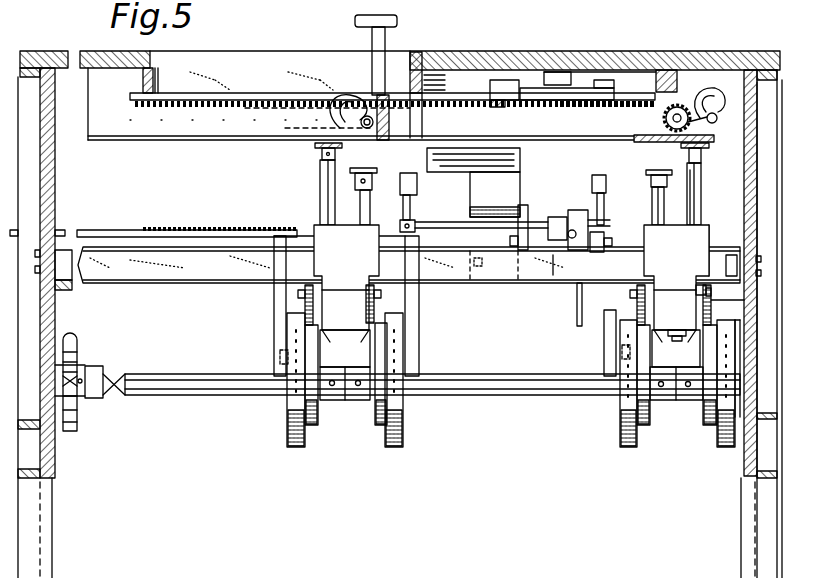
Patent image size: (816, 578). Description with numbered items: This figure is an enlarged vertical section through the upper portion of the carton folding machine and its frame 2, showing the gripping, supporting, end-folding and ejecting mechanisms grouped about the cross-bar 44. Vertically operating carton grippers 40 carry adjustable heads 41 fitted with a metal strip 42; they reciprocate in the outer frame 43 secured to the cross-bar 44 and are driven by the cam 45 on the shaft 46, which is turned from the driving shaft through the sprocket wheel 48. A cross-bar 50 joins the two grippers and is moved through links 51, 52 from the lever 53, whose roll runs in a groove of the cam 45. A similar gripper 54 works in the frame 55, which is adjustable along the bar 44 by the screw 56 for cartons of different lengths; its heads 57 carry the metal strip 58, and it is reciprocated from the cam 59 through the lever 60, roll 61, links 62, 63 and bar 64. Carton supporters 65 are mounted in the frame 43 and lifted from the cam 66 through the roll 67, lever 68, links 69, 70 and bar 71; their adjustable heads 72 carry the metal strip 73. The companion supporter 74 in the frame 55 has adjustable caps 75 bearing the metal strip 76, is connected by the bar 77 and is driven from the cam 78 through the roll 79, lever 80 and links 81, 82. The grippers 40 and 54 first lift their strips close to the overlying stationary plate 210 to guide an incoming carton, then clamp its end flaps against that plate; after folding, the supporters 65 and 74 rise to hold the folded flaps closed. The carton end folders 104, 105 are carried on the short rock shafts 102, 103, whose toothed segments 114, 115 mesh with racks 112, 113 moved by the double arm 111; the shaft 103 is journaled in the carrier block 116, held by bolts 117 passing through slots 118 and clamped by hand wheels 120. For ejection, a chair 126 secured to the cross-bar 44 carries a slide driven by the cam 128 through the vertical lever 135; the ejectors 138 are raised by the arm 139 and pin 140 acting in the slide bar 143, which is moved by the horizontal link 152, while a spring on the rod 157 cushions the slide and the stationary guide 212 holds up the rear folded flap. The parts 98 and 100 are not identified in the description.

The frame 2 is at (40, 184).
The carton grippers and carton guides 40 is at (701, 182).
The adjustable heads 41 is at (701, 156).
The metal strip 42 is at (709, 145).
The frame 43 is at (706, 230).
The cross-bar 44 is at (200, 280).
The cam 45 is at (726, 447).
The shaft 46 is at (116, 361).
The sprocket wheel 48 is at (76, 345).
The cross-bar 50 is at (700, 290).
The link 51 is at (746, 302).
The link 52 is at (703, 340).
The lever 53 is at (755, 340).
The gripper 54 is at (320, 180).
The frame 55 is at (430, 333).
The screw 56 is at (218, 228).
The adjustable heads 57 is at (322, 154).
The metal strip 58 is at (316, 146).
The cam 59 is at (287, 425).
The lever 60 is at (314, 412).
The roll 61 is at (300, 357).
The link 62 is at (345, 365).
The link 63 is at (305, 300).
The bar 64 is at (318, 290).
The carton supporter 65 is at (684, 197).
The cam 66 is at (630, 447).
The roll 67 is at (630, 352).
The lever 68 is at (646, 410).
The link 69 is at (674, 347).
The link 70 is at (637, 312).
The bar 71 is at (647, 292).
The adjustable heads 72 is at (652, 180).
The metal strip 73 is at (665, 175).
The carton supporter 74 is at (369, 208).
The adjustable caps 75 is at (372, 181).
The metal strip 76 is at (365, 168).
The bar 77 is at (380, 288).
The cam 78 is at (403, 430).
The roll 79 is at (380, 357).
The lever 80 is at (376, 418).
The link 81 is at (368, 340).
The link 82 is at (370, 310).
The cover 98 is at (590, 62).
The block 100 is at (497, 108).
The rock shaft 102 is at (717, 118).
The rock shaft 103 is at (360, 122).
The carton end folder 104 is at (716, 95).
The carton end folder 105 is at (352, 95).
The double arm 111 is at (536, 102).
The rack 112 is at (135, 106).
The rack 113 is at (620, 106).
The toothed segment 114 is at (665, 120).
The toothed segment 115 is at (327, 123).
The carrier block 116 is at (421, 118).
The bolts 117 is at (388, 60).
The slots 118 is at (361, 99).
The hand wheels 120 is at (355, 22).
The chair 126 is at (648, 242).
The cam 128 is at (416, 190).
The vertical lever 135 is at (577, 320).
The ejectors 138 is at (600, 176).
The arm 139 is at (596, 248).
The pin 140 is at (579, 221).
The slide bar 143 is at (533, 219).
The horizontal link 152 is at (510, 260).
The rod 157 is at (560, 260).
The stationary plate 210 is at (204, 119).
The stationary guide 212 is at (481, 188).